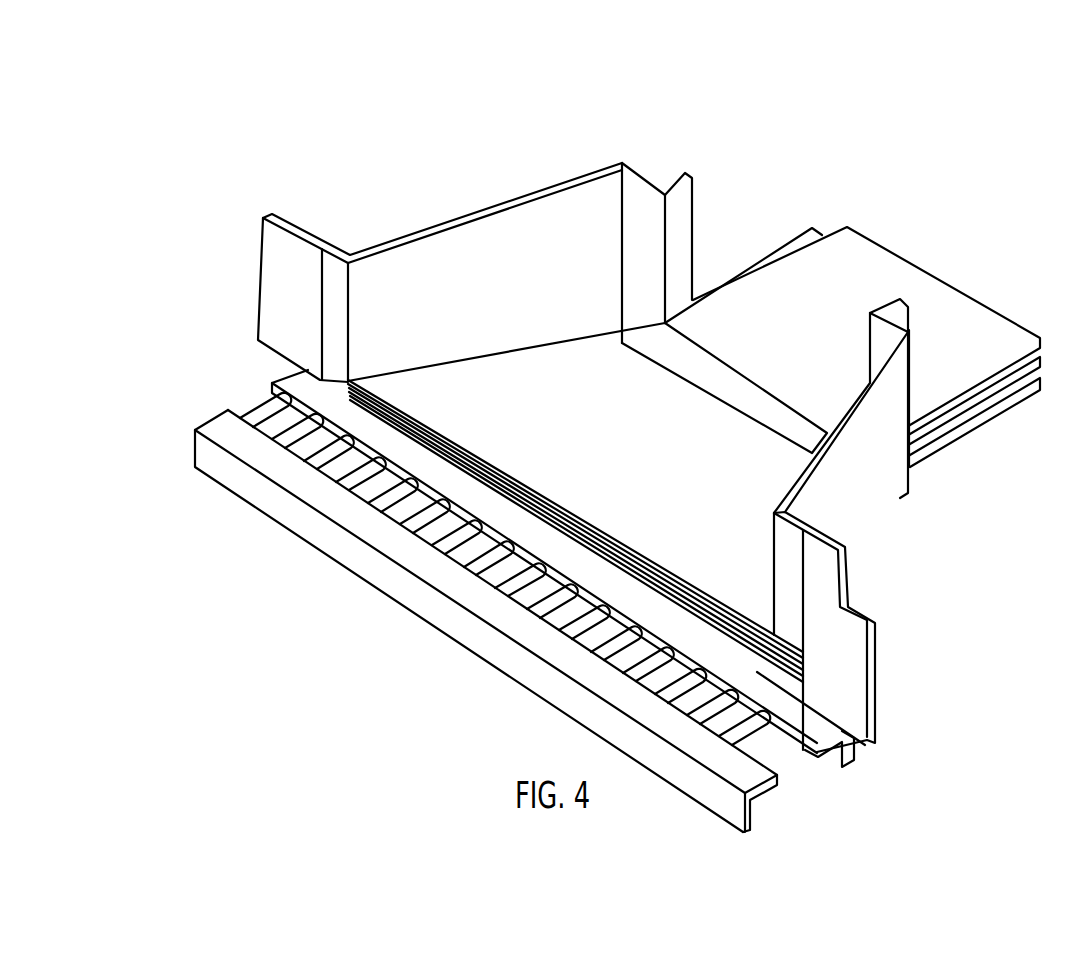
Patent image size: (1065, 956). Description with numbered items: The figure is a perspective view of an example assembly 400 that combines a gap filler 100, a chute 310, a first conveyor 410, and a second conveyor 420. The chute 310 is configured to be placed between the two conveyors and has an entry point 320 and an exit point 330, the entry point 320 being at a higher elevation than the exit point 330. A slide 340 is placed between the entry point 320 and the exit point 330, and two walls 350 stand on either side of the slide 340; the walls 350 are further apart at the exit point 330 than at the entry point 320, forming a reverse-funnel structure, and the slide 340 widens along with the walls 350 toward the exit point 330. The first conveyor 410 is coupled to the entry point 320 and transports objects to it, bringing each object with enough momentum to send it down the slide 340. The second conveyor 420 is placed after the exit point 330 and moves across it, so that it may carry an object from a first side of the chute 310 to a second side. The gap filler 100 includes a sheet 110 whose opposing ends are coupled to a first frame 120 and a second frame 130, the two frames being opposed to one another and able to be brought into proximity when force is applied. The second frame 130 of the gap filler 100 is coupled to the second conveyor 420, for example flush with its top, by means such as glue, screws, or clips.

The assembly 400 is at (571, 63).
The entry point 320 is at (693, 380).
The slide 340 is at (605, 415).
The walls 350 is at (866, 385).
The first conveyor 410 is at (833, 253).
The chute 310 is at (767, 492).
The exit point 330 is at (272, 383).
The second conveyor 420 is at (247, 447).
The first frame 120 is at (683, 580).
The gap filler 100 is at (757, 672).
The sheet 110 is at (805, 658).
The second frame 130 is at (795, 745).